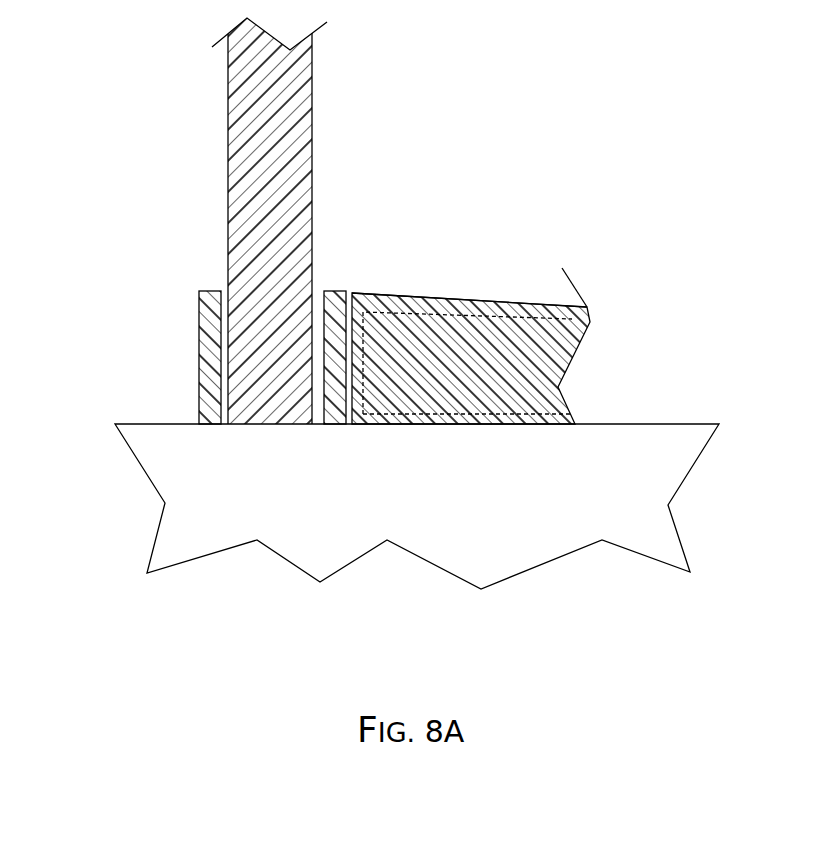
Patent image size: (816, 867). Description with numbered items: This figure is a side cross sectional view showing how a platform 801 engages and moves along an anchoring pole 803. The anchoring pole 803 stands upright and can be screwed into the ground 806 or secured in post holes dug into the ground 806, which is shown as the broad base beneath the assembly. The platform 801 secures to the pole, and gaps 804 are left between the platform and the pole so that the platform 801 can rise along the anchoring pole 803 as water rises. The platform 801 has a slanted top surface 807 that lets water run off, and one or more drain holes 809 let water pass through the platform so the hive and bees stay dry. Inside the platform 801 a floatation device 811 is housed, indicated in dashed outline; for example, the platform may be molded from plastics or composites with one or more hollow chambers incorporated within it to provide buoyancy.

The platform 801 is at (482, 298).
The anchoring pole 803 is at (228, 163).
The gaps 804 is at (212, 278).
The ground 806 is at (122, 440).
The slanted top surface 807 is at (442, 276).
The drain holes 809 is at (356, 282).
The floatation device 811 is at (545, 378).